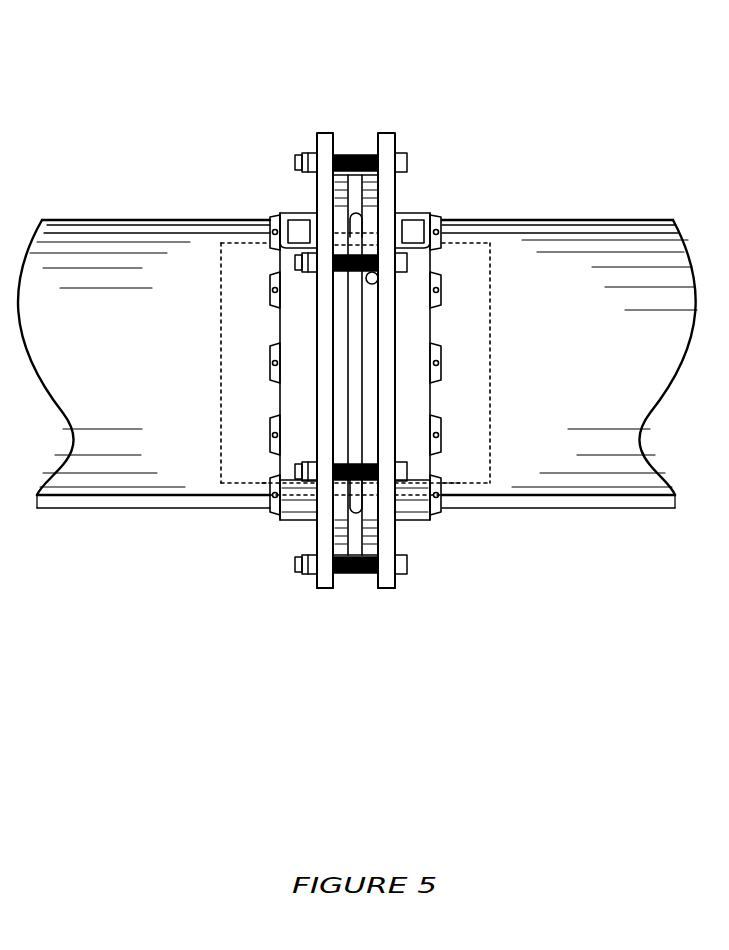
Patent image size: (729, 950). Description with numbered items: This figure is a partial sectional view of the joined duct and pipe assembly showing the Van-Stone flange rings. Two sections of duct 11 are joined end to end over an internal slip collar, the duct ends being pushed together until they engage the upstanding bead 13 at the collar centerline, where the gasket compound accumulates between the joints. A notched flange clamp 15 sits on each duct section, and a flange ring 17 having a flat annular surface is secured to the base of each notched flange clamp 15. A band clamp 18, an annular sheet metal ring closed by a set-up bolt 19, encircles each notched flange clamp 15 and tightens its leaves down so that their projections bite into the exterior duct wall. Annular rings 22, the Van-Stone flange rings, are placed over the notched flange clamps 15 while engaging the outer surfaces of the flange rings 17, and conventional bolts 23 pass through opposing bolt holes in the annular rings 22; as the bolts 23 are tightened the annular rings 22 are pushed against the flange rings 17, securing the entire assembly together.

The duct 11 is at (158, 220).
The bead 13 is at (245, 316).
The notched flange clamp 15 is at (275, 447).
The flange ring 17 is at (389, 133).
The band clamp 18 is at (295, 518).
The set-up bolt 19 is at (288, 220).
The annular ring 22 is at (390, 590).
The bolt 23 is at (407, 165).